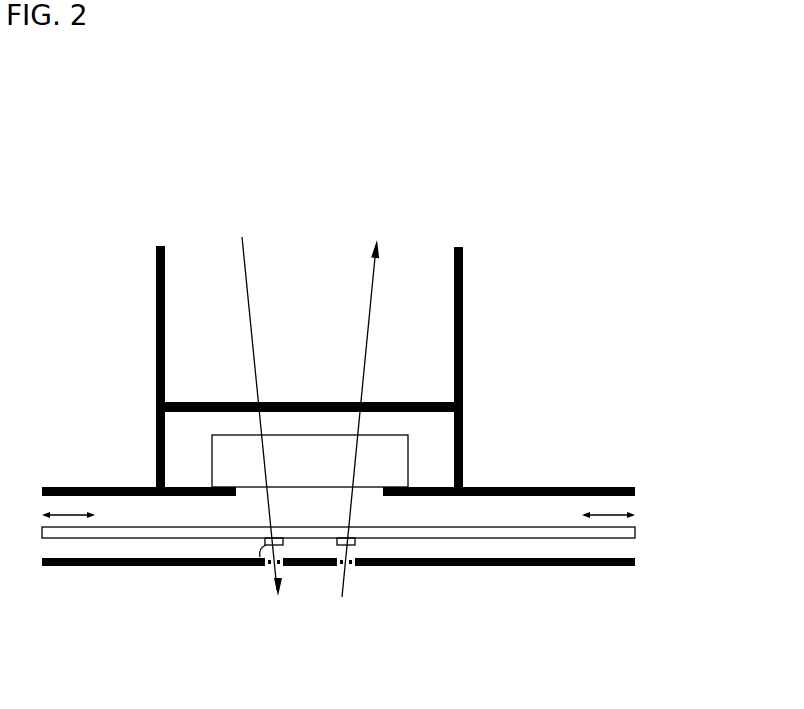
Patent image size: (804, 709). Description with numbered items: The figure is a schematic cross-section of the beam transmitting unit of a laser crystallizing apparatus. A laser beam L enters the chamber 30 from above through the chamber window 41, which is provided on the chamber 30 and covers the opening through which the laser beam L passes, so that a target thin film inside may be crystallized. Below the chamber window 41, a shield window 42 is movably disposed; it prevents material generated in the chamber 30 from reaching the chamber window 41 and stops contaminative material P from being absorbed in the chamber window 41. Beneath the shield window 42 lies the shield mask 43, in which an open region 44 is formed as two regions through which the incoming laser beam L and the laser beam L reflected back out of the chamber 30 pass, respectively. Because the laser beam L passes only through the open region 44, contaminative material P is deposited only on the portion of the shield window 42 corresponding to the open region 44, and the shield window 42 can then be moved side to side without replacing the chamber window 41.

The chamber 30 is at (628, 484).
The chamber window 41 is at (407, 443).
The shield window 42 is at (636, 528).
The shield mask 43 is at (636, 560).
The open region 44 is at (267, 568).
The laser beam L is at (299, 417).
The contaminative material P is at (250, 565).